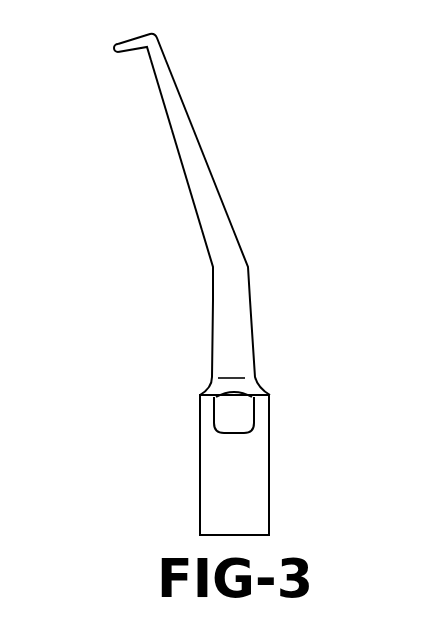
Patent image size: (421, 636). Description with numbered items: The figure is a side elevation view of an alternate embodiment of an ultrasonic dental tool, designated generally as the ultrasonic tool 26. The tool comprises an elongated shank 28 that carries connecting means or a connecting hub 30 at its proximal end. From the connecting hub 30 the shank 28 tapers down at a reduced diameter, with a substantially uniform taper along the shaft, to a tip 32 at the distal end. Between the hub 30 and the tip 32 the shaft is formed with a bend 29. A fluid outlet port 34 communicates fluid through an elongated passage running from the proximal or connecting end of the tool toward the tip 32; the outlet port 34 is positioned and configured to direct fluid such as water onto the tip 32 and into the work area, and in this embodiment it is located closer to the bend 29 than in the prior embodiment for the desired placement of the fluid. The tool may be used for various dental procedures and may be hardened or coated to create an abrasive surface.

The ultrasonic tool 26 is at (191, 272).
The elongated shank 28 is at (200, 175).
The bend 29 is at (228, 268).
The connecting hub 30 is at (243, 480).
The tip 32 is at (125, 45).
The fluid outlet port 34 is at (166, 106).